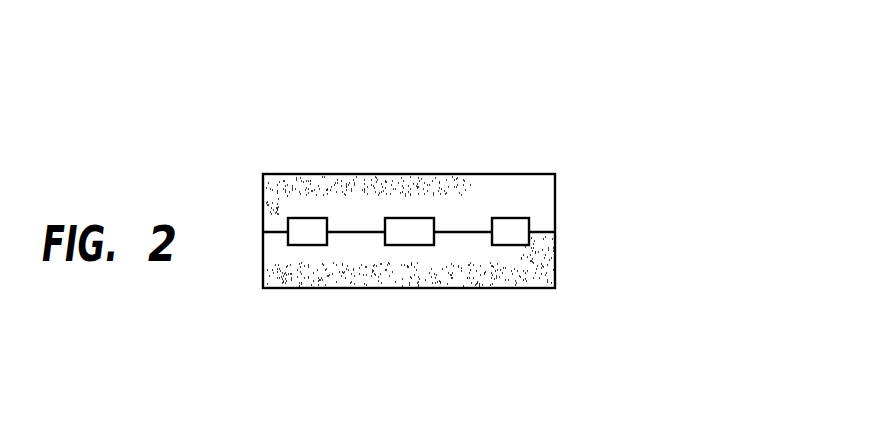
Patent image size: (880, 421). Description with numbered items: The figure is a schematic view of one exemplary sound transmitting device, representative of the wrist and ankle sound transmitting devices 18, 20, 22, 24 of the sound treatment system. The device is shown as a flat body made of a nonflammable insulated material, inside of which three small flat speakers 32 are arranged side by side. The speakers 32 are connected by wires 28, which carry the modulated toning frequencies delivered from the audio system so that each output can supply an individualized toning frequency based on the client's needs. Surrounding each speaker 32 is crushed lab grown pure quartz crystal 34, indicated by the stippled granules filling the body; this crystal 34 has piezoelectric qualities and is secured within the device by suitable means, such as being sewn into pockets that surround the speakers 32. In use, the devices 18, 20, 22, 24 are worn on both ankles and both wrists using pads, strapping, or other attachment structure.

The sound transmitting device 18 is at (379, 206).
The sound transmitting device 20 is at (379, 206).
The sound transmitting device 22 is at (379, 206).
The sound transmitting device 24 is at (379, 206).
The wires 28 is at (355, 232).
The small flat speakers 32 is at (300, 218).
The crushed lab grown pure quartz crystal 34 is at (532, 193).